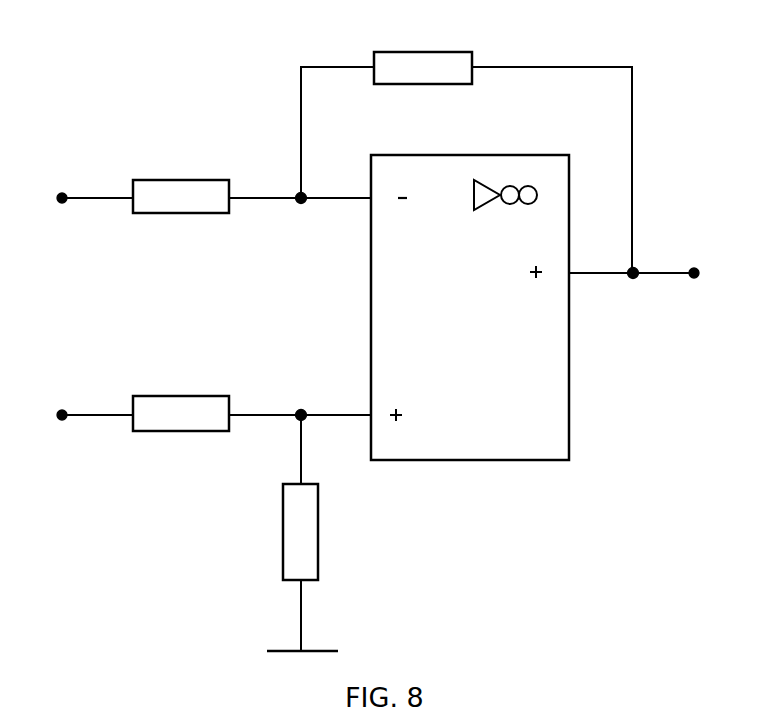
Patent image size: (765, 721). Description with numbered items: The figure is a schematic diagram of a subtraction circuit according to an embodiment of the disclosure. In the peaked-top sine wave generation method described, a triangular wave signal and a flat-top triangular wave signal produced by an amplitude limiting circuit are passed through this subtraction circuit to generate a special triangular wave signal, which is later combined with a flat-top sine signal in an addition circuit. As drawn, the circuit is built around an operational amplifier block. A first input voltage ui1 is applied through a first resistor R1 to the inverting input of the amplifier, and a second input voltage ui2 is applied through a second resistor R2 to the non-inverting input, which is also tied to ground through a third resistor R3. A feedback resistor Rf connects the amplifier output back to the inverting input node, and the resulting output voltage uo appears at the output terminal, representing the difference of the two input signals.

The first input resistor R1 is at (252, 220).
The second input resistor R2 is at (252, 440).
The ground resistor R3 is at (312, 533).
The feedback resistor Rf is at (466, 145).
The first input voltage ui1 is at (79, 200).
The second input voltage ui2 is at (79, 416).
The output voltage uo is at (651, 274).